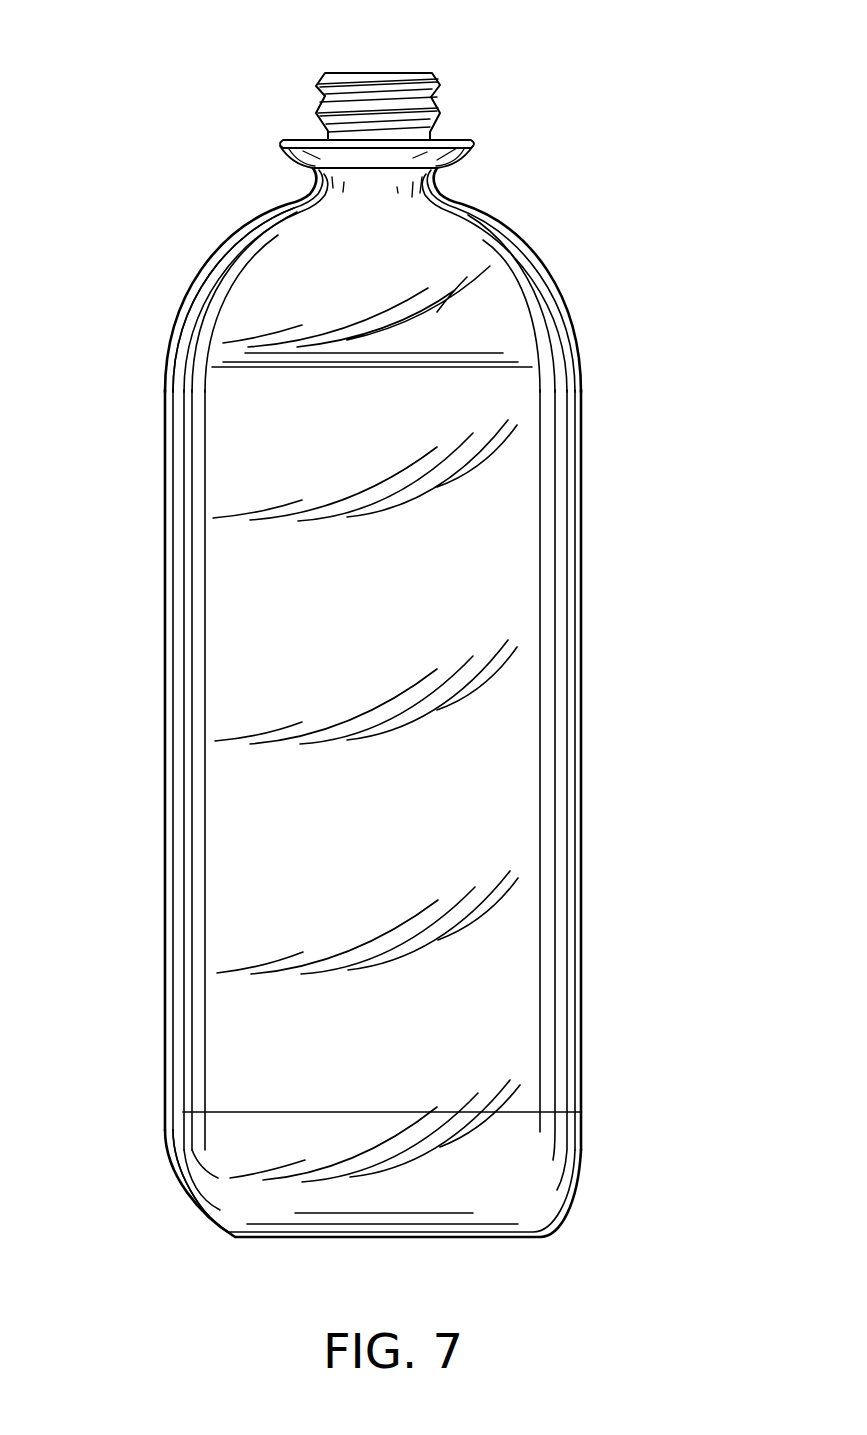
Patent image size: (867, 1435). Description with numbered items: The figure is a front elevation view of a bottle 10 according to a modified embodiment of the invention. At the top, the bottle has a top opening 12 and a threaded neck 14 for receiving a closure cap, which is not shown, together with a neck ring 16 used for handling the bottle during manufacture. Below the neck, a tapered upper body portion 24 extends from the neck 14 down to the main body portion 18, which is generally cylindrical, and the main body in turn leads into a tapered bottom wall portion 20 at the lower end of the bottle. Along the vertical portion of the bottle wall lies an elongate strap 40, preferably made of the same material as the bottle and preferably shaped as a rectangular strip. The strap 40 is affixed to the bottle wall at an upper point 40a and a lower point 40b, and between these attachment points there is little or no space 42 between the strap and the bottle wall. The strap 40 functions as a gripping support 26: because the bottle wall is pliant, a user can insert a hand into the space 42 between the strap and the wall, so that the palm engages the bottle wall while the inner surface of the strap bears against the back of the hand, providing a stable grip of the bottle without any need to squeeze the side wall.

The bottle 10 is at (405, 624).
The top opening 12 is at (425, 72).
The threaded neck 14 is at (440, 108).
The neck ring 16 is at (477, 142).
The main body portion 18 is at (636, 470).
The tapered bottom wall portion 20 is at (575, 1165).
The tapered upper body portion 24 is at (553, 277).
The gripping support 26 is at (150, 577).
The elongate strap 40 is at (163, 690).
The upper point 40a is at (175, 343).
The lower point 40b is at (185, 1175).
The space 42 is at (177, 795).